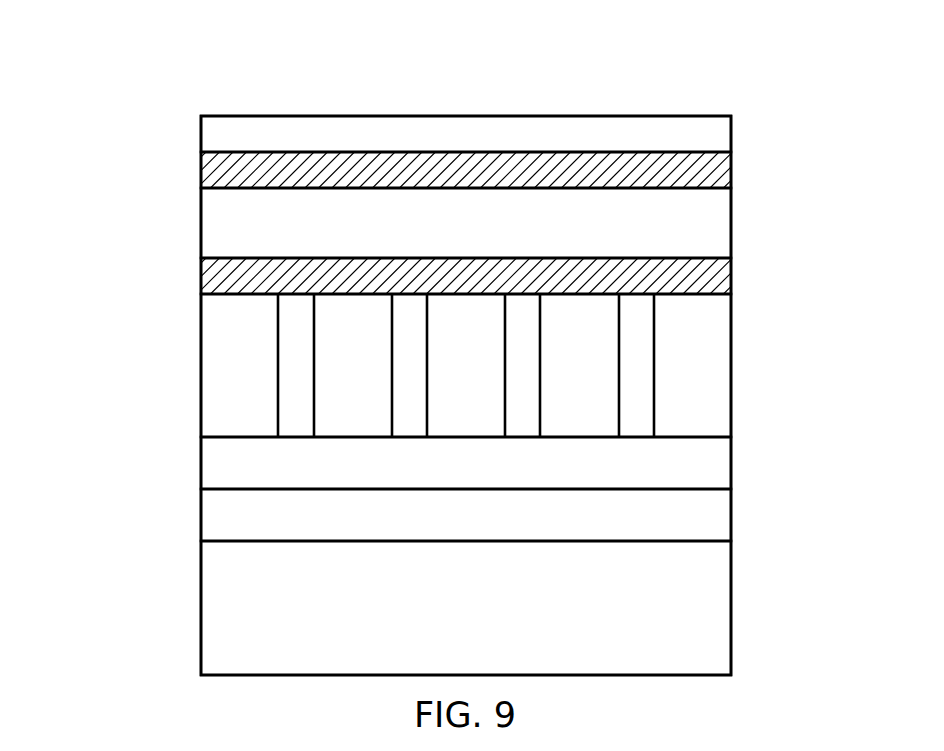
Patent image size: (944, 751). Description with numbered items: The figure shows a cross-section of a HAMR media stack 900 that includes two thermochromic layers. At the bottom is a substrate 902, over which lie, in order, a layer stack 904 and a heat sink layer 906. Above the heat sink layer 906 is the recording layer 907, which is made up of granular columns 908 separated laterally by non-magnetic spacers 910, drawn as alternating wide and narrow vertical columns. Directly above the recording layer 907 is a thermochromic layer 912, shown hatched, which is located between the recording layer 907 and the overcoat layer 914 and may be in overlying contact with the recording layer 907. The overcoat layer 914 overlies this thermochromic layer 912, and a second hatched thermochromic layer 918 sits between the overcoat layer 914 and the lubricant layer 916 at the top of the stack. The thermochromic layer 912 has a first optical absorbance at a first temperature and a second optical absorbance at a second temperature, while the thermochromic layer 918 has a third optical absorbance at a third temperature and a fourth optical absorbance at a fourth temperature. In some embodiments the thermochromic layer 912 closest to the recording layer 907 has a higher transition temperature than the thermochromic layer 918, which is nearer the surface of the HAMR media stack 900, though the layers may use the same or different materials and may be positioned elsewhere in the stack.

The HAMR media stack 900 is at (103, 117).
The substrate 902 is at (445, 619).
The layer stack 904 is at (445, 527).
The heat sink layer 906 is at (445, 474).
The recording layer 907 is at (471, 390).
The granular columns 908 is at (727, 377).
The non-magnetic spacers 910 is at (520, 428).
The thermochromic layer 912 is at (725, 275).
The overcoat layer 914 is at (445, 234).
The lubricant layer 916 is at (445, 146).
The thermochromic layer 918 is at (725, 171).